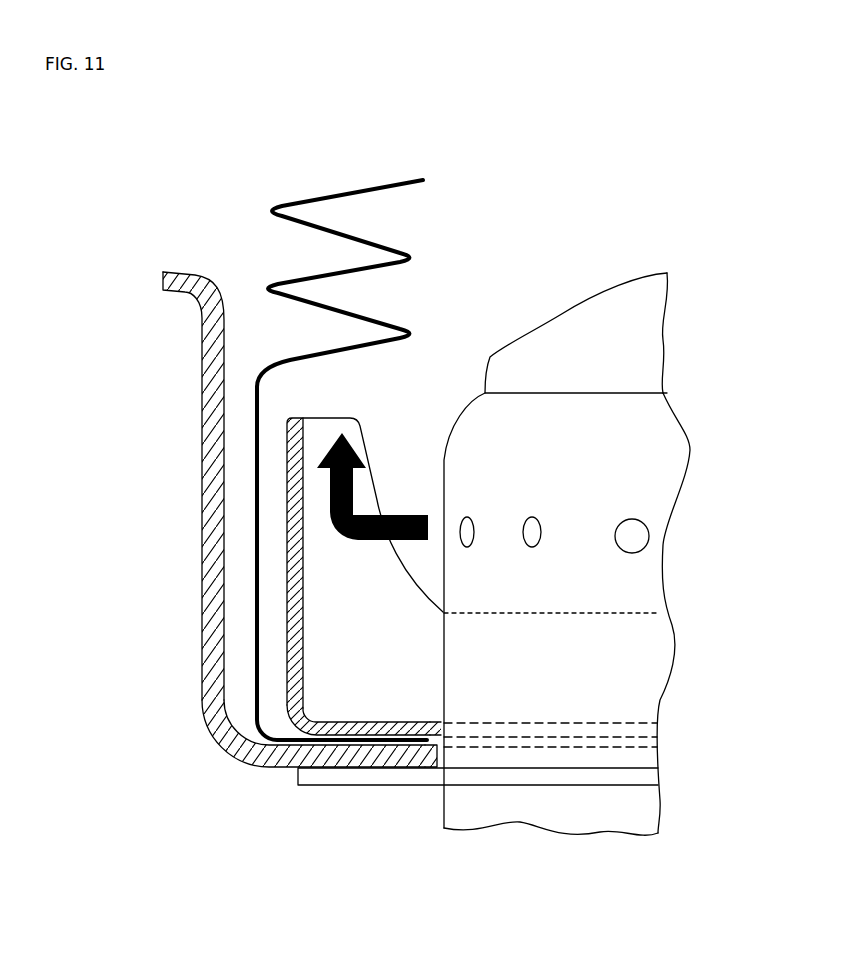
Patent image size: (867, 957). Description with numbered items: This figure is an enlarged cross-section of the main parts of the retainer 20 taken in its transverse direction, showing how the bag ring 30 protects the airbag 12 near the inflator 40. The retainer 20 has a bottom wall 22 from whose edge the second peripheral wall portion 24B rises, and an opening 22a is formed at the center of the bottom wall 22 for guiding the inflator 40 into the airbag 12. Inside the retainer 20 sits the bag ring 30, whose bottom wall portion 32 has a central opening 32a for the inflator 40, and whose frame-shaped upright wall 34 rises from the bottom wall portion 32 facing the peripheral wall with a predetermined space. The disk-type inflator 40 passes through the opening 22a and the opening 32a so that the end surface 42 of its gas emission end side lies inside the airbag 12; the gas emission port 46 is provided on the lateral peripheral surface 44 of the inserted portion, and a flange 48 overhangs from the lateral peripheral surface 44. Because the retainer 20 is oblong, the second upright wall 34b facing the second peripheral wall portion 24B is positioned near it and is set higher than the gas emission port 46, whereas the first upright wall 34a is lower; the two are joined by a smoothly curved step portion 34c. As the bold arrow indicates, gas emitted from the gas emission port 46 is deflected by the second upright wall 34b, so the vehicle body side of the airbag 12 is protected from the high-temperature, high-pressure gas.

The airbag 12 is at (290, 195).
The retainer 20 is at (262, 520).
The bottom wall 22 is at (343, 757).
The opening 22a is at (437, 758).
The second peripheral wall portion 24B is at (198, 430).
The bag ring 30 is at (283, 527).
The bottom wall portion 32 is at (377, 722).
The opening 32a is at (435, 728).
The upright wall 34 is at (393, 541).
The first upright wall 34a is at (557, 612).
The second upright wall 34b is at (287, 568).
The step portion 34c is at (377, 493).
The inflator 40 is at (603, 510).
The end surface 42 is at (643, 273).
The lateral peripheral surface 44 is at (667, 475).
The gas emission port 46 is at (649, 536).
The flange 48 is at (388, 778).